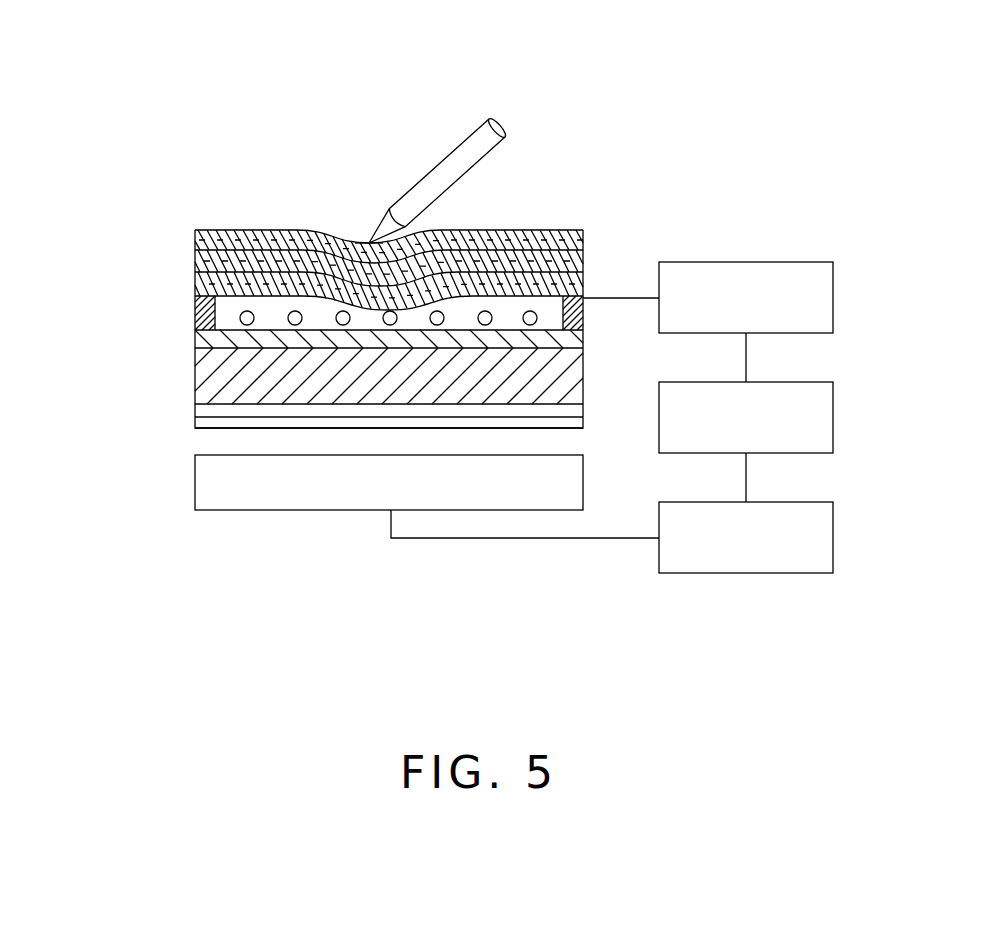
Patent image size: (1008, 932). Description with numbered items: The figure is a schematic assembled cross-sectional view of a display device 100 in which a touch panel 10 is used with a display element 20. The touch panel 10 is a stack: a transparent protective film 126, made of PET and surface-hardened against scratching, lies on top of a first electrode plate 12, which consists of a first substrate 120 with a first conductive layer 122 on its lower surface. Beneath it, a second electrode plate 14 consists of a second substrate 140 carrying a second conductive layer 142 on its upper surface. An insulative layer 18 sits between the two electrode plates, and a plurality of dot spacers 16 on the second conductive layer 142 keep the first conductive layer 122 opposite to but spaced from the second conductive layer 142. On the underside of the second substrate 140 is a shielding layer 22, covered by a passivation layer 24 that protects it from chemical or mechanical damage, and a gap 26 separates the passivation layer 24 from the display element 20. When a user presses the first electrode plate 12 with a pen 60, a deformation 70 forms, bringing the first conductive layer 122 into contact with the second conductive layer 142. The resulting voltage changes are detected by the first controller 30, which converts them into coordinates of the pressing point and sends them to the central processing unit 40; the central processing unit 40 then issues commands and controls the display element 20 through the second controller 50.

The display device 100 is at (497, 35).
The pen 60 is at (467, 150).
The deformation 70 is at (369, 243).
The touch panel 10 is at (70, 200).
The transparent protective film 126 is at (200, 232).
The first electrode plate 12 is at (106, 242).
The first substrate 120 is at (200, 262).
The first conductive layer 122 is at (200, 293).
The insulative layer 18 is at (583, 312).
The dot spacers 16 is at (529, 311).
The second electrode plate 14 is at (106, 325).
The second conductive layer 142 is at (200, 342).
The second substrate 140 is at (200, 375).
The shielding layer 22 is at (200, 409).
The passivation layer 24 is at (200, 422).
The gap 26 is at (208, 443).
The display element 20 is at (208, 494).
The first controller 30 is at (827, 305).
The central processing unit 40 is at (827, 413).
The second controller 50 is at (827, 517).